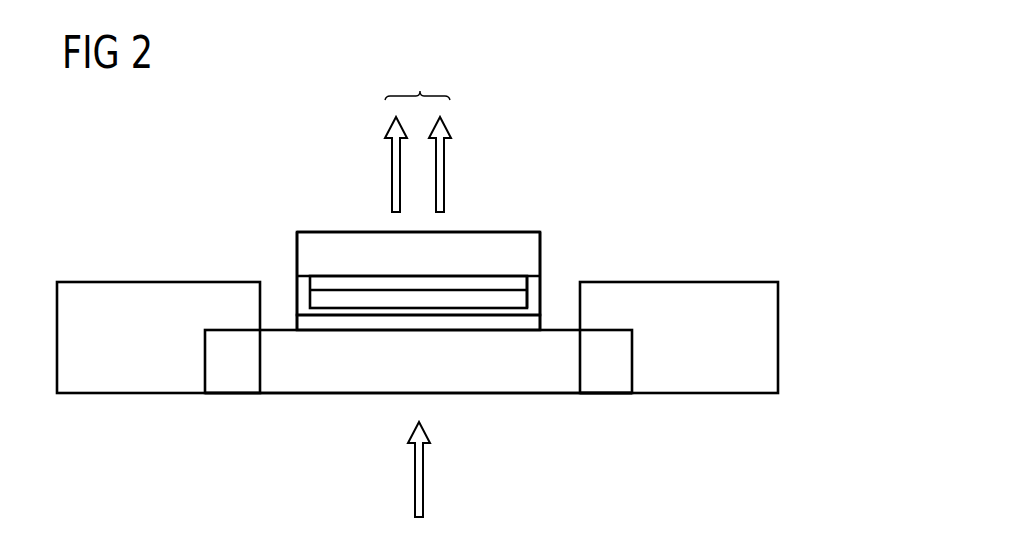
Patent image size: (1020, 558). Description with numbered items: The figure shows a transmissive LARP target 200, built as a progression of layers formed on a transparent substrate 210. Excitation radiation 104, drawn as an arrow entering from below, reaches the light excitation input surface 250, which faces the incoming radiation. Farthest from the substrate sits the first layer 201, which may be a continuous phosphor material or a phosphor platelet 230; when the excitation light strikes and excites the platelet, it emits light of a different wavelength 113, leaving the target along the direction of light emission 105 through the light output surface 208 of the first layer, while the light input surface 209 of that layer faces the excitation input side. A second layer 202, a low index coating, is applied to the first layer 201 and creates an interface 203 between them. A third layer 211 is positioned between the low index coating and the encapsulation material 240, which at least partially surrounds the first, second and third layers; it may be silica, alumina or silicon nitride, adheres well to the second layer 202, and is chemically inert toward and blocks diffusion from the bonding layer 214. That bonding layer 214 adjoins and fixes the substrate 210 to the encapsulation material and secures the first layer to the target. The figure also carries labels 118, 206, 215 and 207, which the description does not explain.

The LARP target 200 is at (716, 124).
The direction of light emission 105 is at (417, 76).
The emitted light component 118 is at (392, 155).
The light of a different wavelength 113 is at (445, 155).
The first layer 201 is at (307, 260).
The corner surface of encapsulation 206 is at (305, 232).
The light output surface 208 is at (513, 233).
The light input surface 209 is at (353, 276).
The phosphor platelet 230 is at (535, 250).
The encapsulation material 240 is at (297, 302).
The interface 203 is at (532, 277).
The second layer 202 is at (517, 283).
The third layer 211 is at (445, 300).
The bonding layer 214 is at (372, 318).
The light excitation input surface 250 is at (278, 393).
The housing frame 215 is at (138, 393).
The bottom surface of carrier 207 is at (500, 393).
The substrate 210 is at (592, 393).
The excitation radiation 104 is at (415, 478).